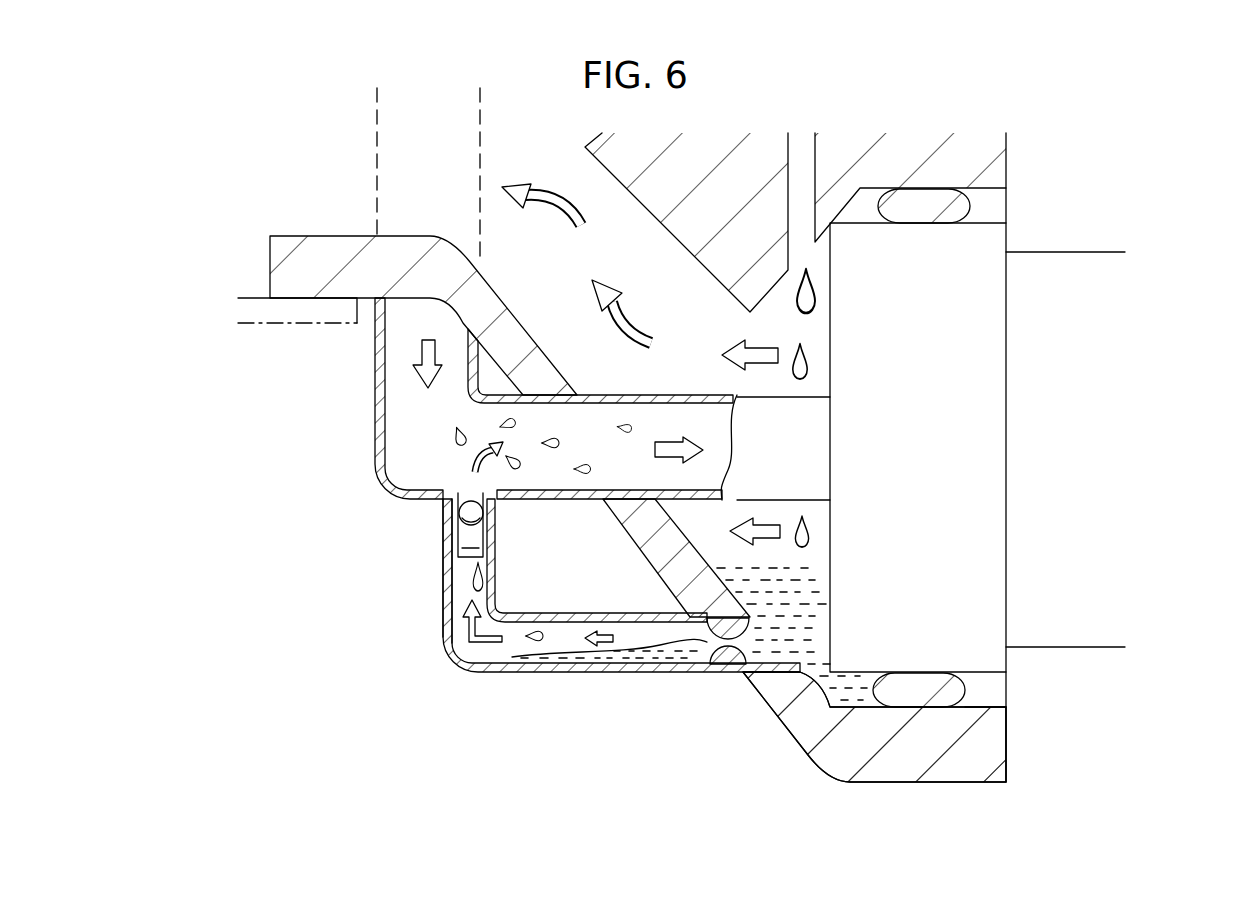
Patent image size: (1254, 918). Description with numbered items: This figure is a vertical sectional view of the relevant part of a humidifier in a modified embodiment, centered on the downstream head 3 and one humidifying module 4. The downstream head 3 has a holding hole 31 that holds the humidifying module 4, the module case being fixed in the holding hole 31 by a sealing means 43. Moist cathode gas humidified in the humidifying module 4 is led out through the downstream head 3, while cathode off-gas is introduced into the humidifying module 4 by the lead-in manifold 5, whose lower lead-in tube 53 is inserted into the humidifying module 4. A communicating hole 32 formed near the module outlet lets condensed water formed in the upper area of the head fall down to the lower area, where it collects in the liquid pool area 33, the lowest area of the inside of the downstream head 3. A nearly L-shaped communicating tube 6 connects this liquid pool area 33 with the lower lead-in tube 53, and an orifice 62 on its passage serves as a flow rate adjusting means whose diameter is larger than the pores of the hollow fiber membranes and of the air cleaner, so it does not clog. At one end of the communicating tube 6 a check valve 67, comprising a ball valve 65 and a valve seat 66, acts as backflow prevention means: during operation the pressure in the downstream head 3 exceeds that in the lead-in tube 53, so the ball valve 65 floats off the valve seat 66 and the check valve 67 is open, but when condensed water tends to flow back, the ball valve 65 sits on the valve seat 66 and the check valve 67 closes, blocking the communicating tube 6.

The downstream head 3 is at (862, 795).
The humidifying module 4 is at (1097, 632).
The lead-in manifold 5 is at (373, 400).
The communicating tube 6 is at (471, 668).
The holding hole 31 is at (978, 697).
The communicating hole 32 is at (818, 175).
The liquid pool area 33 is at (807, 647).
The sealing means 43 is at (920, 697).
The lead-in tube 53 is at (549, 502).
The orifice 62 is at (727, 660).
The ball valve 65 is at (465, 515).
The valve seat 66 is at (443, 597).
The check valve 67 is at (438, 532).